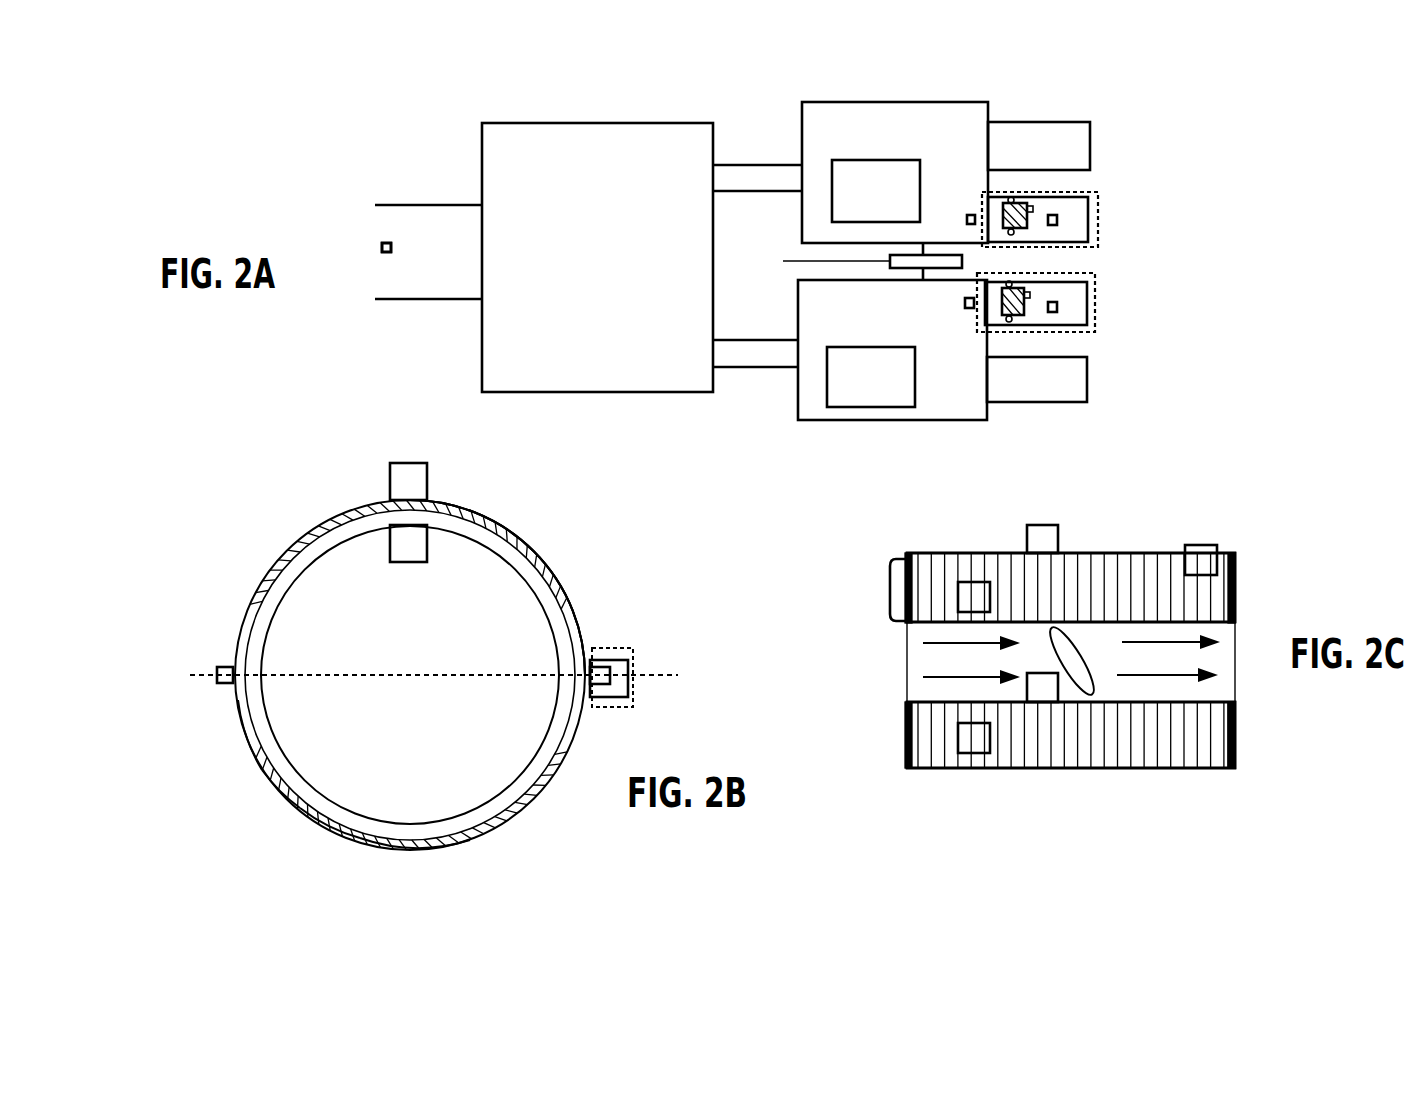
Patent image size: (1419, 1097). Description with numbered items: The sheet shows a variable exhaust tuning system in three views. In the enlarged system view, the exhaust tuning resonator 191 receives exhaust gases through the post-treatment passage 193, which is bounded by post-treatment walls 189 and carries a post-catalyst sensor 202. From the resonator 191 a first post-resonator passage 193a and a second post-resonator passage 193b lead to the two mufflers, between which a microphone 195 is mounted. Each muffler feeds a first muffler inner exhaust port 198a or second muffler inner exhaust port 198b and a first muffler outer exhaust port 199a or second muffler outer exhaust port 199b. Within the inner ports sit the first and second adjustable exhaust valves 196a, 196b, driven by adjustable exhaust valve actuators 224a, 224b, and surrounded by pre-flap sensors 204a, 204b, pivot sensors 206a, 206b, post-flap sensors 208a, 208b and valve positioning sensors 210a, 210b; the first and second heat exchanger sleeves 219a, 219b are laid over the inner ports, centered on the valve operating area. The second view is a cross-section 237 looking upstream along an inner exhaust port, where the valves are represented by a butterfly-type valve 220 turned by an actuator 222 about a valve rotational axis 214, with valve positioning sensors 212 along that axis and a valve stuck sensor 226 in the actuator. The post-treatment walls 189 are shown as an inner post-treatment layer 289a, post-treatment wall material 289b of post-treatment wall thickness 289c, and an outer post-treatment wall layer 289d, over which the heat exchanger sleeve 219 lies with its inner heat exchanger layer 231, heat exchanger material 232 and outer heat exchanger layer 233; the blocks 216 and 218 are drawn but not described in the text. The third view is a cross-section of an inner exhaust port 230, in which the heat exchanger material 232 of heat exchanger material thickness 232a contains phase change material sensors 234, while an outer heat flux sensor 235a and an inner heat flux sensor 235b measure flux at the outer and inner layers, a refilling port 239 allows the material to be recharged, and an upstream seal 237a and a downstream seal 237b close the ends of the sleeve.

In FIG. 2A, the post-treatment walls 189 is at (407, 301).
In FIG. 2A, the exhaust tuning resonator 191 is at (612, 263).
In FIG. 2A, the post-treatment passage 193 is at (439, 263).
In FIG. 2A, the first post-resonator passage 193a is at (775, 192).
In FIG. 2A, the second post-resonator passage 193b is at (775, 367).
In FIG. 2A, the microphone 195 is at (855, 261).
In FIG. 2A, the first adjustable exhaust valve 196a is at (1017, 198).
In FIG. 2A, the second adjustable exhaust valve 196b is at (1000, 286).
In FIG. 2A, the first muffler inner exhaust port 198a is at (1090, 224).
In FIG. 2A, the second muffler inner exhaust port 198b is at (1096, 290).
In FIG. 2A, the first muffler outer exhaust port 199a is at (1031, 205).
In FIG. 2A, the second muffler outer exhaust port 199b is at (1090, 402).
In FIG. 2A, the post-catalyst sensor 202 is at (380, 248).
In FIG. 2A, the first pre-flap sensor 204a is at (966, 218).
In FIG. 2A, the second pre-flap sensor 204b is at (972, 310).
In FIG. 2A, the first pivot sensor 206a is at (1014, 235).
In FIG. 2A, the second pivot sensor 206b is at (1012, 323).
In FIG. 2A, the first post-flap sensor 208a is at (1058, 224).
In FIG. 2A, the second post-flap sensor 208b is at (1058, 312).
In FIG. 2A, the first valve positioning sensor 210a is at (1028, 203).
In FIG. 2A, the second valve positioning sensor 210b is at (1026, 300).
In FIG. 2A, the first heat exchanger sleeve 219a is at (1097, 193).
In FIG. 2A, the second heat exchanger sleeve 219b is at (1096, 332).
In FIG. 2A, the first adjustable exhaust valve actuator 224a is at (1009, 197).
In FIG. 2A, the second adjustable exhaust valve actuator 224b is at (1009, 282).
In FIG. 2B, the valve positioning sensor 212 is at (226, 665).
In FIG. 2B, the valve rotational axis 214 is at (253, 700).
In FIG. 2B, the inner block 216 is at (390, 545).
In FIG. 2B, the outer block 218 is at (390, 480).
In FIG. 2B, the heat exchanger sleeve 219 is at (538, 548).
In FIG. 2C, the heat exchanger sleeve 219 is at (1139, 582).
In FIG. 2B, the valve 220 is at (426, 665).
In FIG. 2C, the valve 220 is at (1094, 671).
In FIG. 2B, the actuator 222 is at (633, 676).
In FIG. 2B, the valve stuck sensor 226 is at (634, 706).
In FIG. 2B, the inner heat exchanger layer 231 is at (465, 502).
In FIG. 2C, the inner heat exchanger layer 231 is at (1237, 592).
In FIG. 2B, the outer heat exchanger layer 233 is at (483, 520).
In FIG. 2C, the outer heat exchanger layer 233 is at (1130, 768).
In FIG. 2B, the cross-section 237 is at (588, 497).
In FIG. 2B, the inner post-treatment layer 289a is at (356, 840).
In FIG. 2B, the post-treatment wall material 289b is at (278, 775).
In FIG. 2B, the post-treatment wall thickness 289c is at (445, 833).
In FIG. 2B, the outer post-treatment wall layer 289d is at (302, 808).
In FIG. 2C, the inner exhaust port 230 is at (1096, 520).
In FIG. 2C, the heat exchanger material 232 is at (1088, 602).
In FIG. 2C, the heat exchanger material thickness 232a is at (890, 590).
In FIG. 2C, the phase change material sensor 234 is at (973, 582).
In FIG. 2C, the outer heat flux sensor 235a is at (1041, 525).
In FIG. 2C, the inner heat flux sensor 235b is at (1060, 702).
In FIG. 2C, the refilling port 239 is at (1218, 548).
In FIG. 2C, the upstream seal 237a is at (907, 736).
In FIG. 2C, the downstream seal 237b is at (1238, 746).